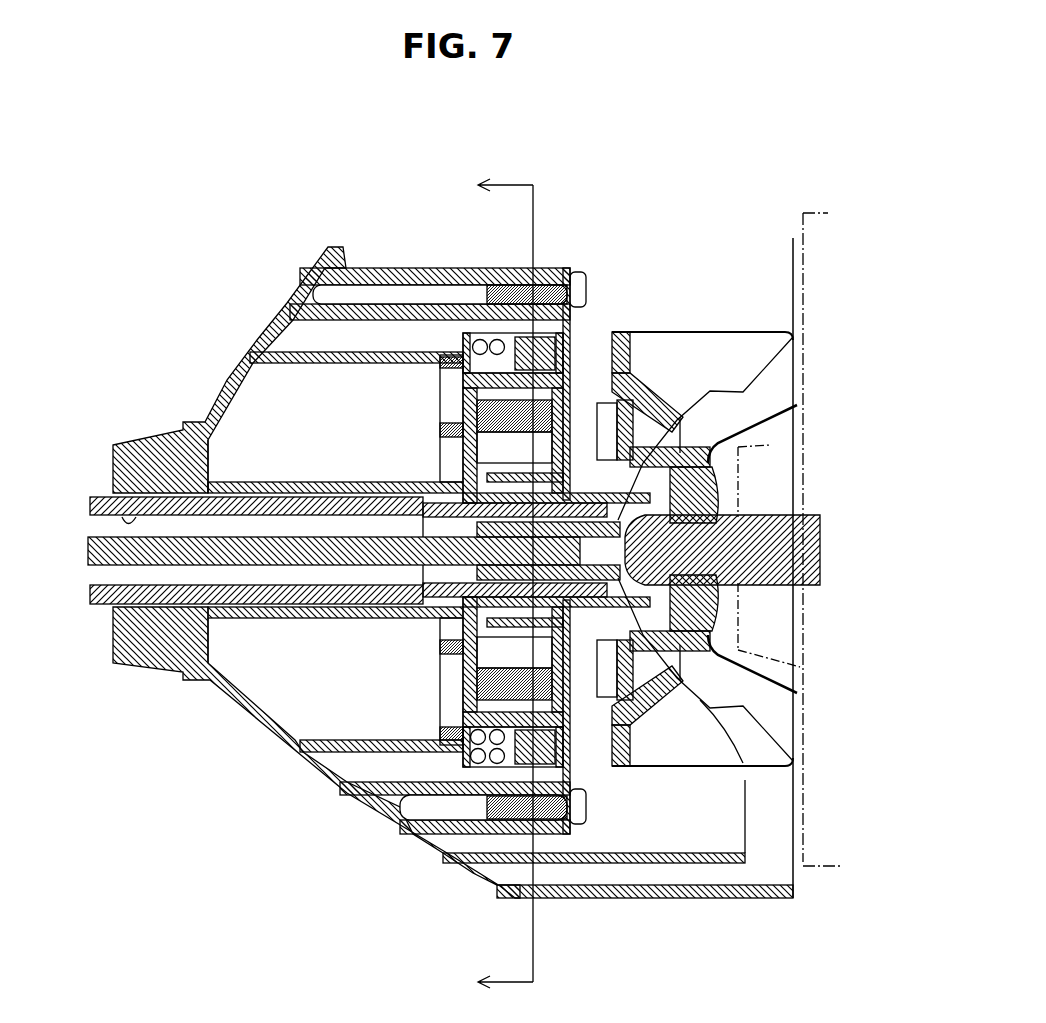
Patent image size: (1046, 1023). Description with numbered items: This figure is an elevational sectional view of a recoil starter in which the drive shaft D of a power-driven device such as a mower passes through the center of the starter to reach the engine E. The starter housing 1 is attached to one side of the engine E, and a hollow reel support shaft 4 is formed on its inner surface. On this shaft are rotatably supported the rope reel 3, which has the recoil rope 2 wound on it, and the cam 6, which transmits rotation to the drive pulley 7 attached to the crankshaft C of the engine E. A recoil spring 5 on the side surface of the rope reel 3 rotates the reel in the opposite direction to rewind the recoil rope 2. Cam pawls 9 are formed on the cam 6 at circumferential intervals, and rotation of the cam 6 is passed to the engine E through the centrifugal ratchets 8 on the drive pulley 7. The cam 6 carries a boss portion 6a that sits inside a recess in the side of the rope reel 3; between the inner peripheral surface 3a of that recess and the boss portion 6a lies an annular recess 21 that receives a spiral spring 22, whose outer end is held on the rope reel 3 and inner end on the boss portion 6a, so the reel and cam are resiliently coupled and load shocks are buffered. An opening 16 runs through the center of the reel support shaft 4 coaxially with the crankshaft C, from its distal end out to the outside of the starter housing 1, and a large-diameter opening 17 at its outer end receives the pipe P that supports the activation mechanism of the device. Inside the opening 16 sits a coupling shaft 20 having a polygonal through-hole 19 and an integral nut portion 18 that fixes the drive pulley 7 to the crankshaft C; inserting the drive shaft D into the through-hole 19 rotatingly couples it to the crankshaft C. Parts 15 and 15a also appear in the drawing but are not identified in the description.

The starter housing 1 is at (232, 358).
The recoil rope 2 is at (480, 286).
The rope reel 3 is at (372, 272).
The inner peripheral surface 3a is at (455, 403).
The reel support shaft 4 is at (430, 483).
The recoil spring 5 is at (440, 637).
The cam 6 is at (570, 630).
The boss portion 6a is at (465, 470).
The drive pulley 7 is at (712, 683).
The centrifugal ratchets 8 is at (840, 784).
The cam pawls 9 is at (793, 337).
The rotor cup 15 is at (612, 332).
The rotor sleeve 15a is at (577, 420).
The opening 16 is at (330, 622).
The opening 17 is at (110, 482).
The nut portion 18 is at (717, 620).
The through-hole 19 is at (702, 553).
The coupling shaft 20 is at (735, 467).
The annular recess 21 is at (535, 464).
The spiral spring 22 is at (583, 745).
The crankshaft C is at (793, 485).
The drive shaft D is at (88, 560).
The engine E is at (803, 214).
The pipe P is at (97, 606).